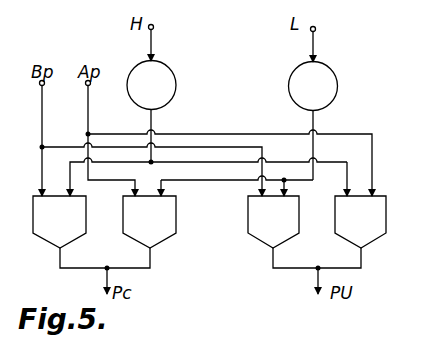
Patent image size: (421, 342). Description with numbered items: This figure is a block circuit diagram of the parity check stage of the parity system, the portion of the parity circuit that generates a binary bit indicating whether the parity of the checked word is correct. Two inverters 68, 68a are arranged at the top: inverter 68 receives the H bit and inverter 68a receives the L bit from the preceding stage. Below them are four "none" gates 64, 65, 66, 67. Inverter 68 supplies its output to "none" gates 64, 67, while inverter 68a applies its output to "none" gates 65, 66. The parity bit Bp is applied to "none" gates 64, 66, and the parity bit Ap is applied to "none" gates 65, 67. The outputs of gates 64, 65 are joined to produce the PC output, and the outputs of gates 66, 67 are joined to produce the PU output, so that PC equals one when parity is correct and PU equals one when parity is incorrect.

The none gate 64 is at (66, 247).
The none gate 65 is at (156, 247).
The none gate 66 is at (268, 241).
The none gate 67 is at (355, 241).
The inverter 68 is at (173, 78).
The inverter 68a is at (336, 80).